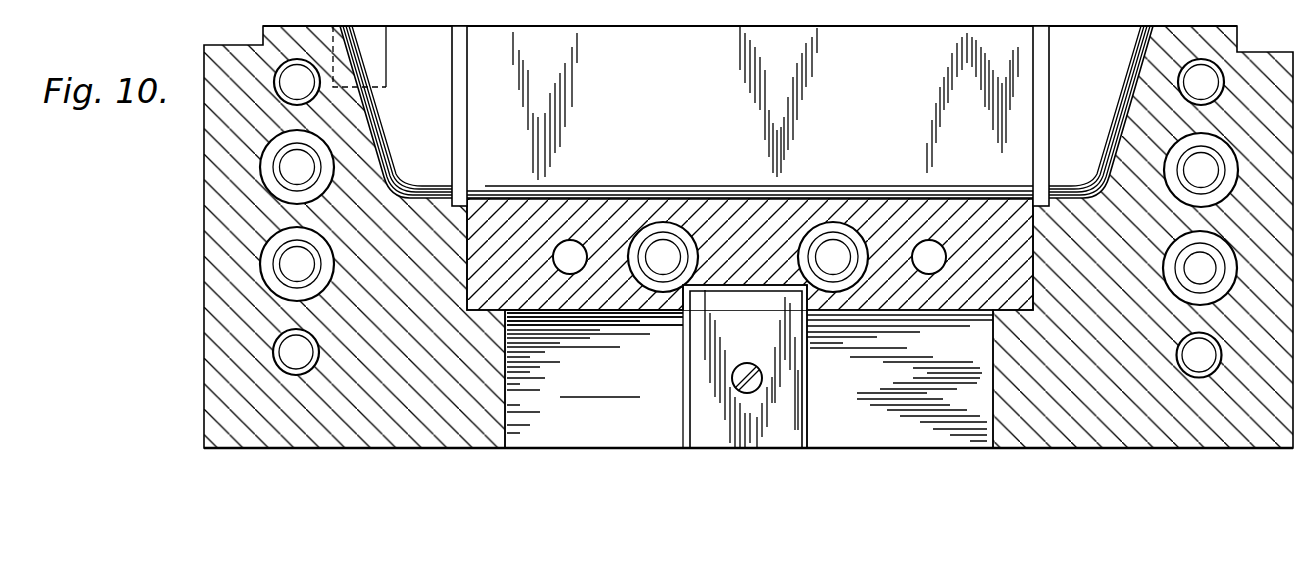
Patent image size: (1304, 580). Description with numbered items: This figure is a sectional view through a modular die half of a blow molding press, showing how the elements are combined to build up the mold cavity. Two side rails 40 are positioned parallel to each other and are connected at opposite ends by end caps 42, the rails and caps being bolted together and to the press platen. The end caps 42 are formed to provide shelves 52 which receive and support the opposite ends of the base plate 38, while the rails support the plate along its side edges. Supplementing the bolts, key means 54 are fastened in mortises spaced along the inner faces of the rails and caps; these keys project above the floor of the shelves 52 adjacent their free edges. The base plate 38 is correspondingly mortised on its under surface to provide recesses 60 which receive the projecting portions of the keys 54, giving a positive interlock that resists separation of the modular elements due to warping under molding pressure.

The base plate 38 is at (947, 300).
The side rails 40 is at (367, 422).
The end caps 42 is at (613, 432).
The shelves 52 is at (560, 313).
The key means 54 is at (790, 408).
The recesses 60 is at (703, 300).